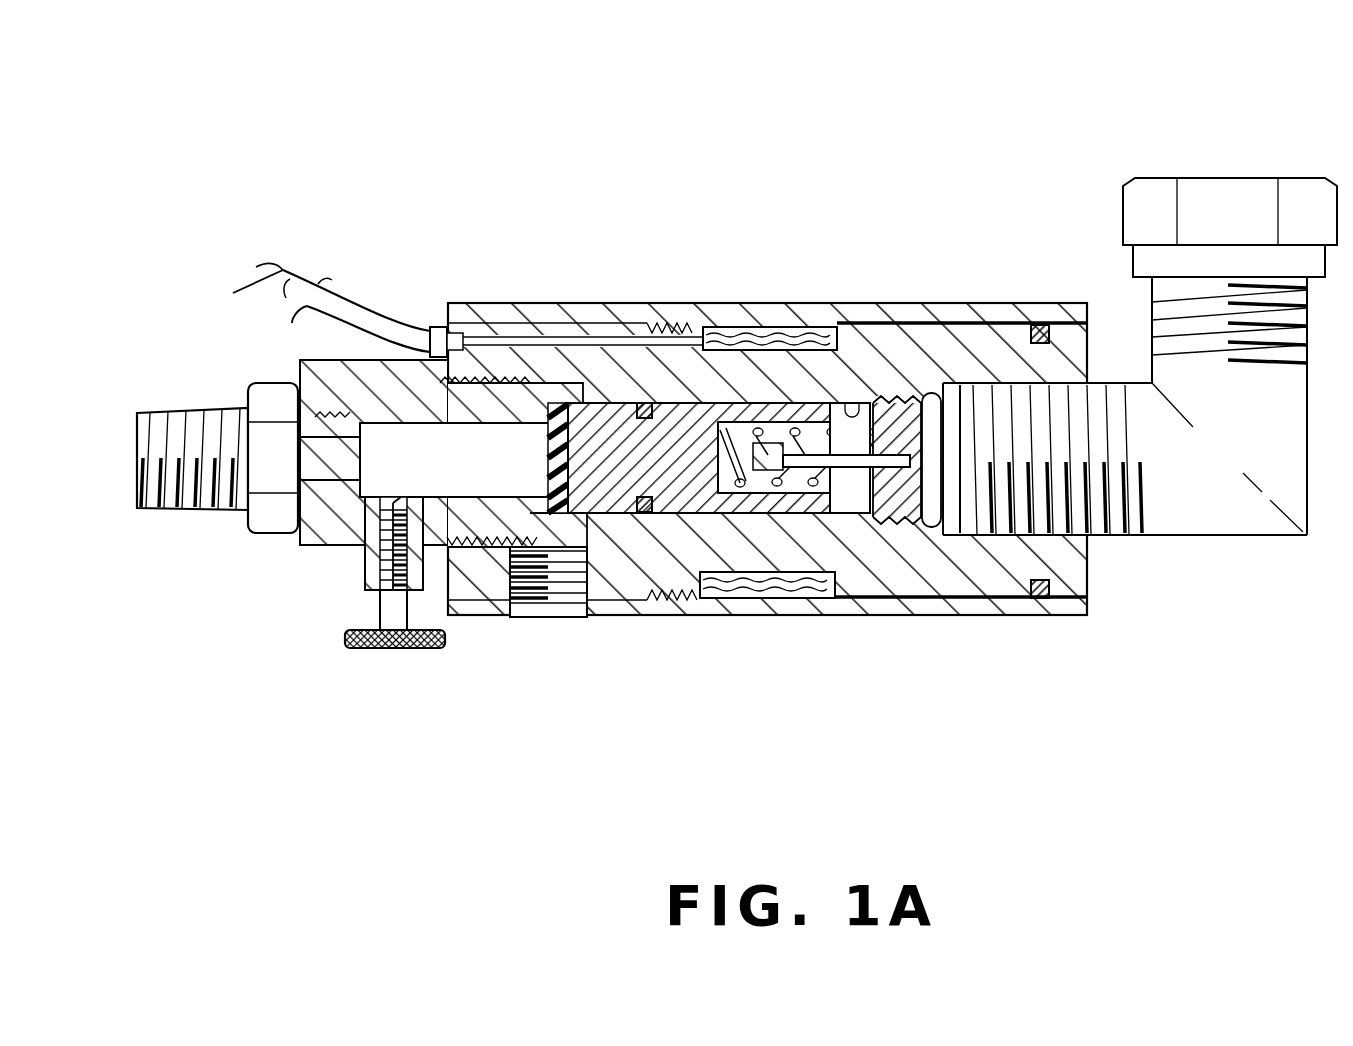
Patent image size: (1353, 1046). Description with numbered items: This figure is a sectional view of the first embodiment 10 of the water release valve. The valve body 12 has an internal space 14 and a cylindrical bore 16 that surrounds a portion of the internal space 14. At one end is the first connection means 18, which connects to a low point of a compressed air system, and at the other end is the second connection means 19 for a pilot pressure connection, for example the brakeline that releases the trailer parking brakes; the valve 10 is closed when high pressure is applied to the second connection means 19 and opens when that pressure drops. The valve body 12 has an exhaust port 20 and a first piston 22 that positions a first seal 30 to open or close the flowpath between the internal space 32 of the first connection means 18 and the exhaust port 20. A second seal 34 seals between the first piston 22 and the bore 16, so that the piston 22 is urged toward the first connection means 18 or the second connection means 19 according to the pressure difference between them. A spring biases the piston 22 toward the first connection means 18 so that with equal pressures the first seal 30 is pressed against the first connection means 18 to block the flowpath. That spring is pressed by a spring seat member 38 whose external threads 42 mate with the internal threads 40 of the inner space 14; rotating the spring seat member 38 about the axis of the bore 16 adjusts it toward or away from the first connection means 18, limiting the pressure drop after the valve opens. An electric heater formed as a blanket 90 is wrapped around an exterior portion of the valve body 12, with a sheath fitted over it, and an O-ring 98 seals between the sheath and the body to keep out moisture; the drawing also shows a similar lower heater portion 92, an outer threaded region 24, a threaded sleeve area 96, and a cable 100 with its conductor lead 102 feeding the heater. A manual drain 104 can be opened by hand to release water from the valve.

The first embodiment 10 is at (427, 188).
The valve body 12 is at (487, 592).
The internal space 14 is at (968, 383).
The cylindrical bore 16 is at (857, 404).
The first connection means 18 is at (255, 540).
The second connection means 19 is at (1234, 452).
The exhaust port 20 is at (563, 598).
The first piston 22 is at (617, 514).
The threaded end of housing 24 is at (498, 306).
The first seal 30 is at (547, 462).
The internal space of first attachment means 32 is at (400, 434).
The second seal 34 is at (645, 402).
The spring seat member 38 is at (895, 528).
The internal threads 40 is at (957, 536).
The external threads 42 is at (904, 400).
The blanket 90 is at (788, 326).
The lower heater element 92 is at (672, 601).
The threaded sleeve 96 is at (692, 326).
The O-ring 98 is at (1040, 327).
The cable 100 is at (268, 295).
The conductor lead 102 is at (598, 335).
The manual drain 104 is at (368, 656).